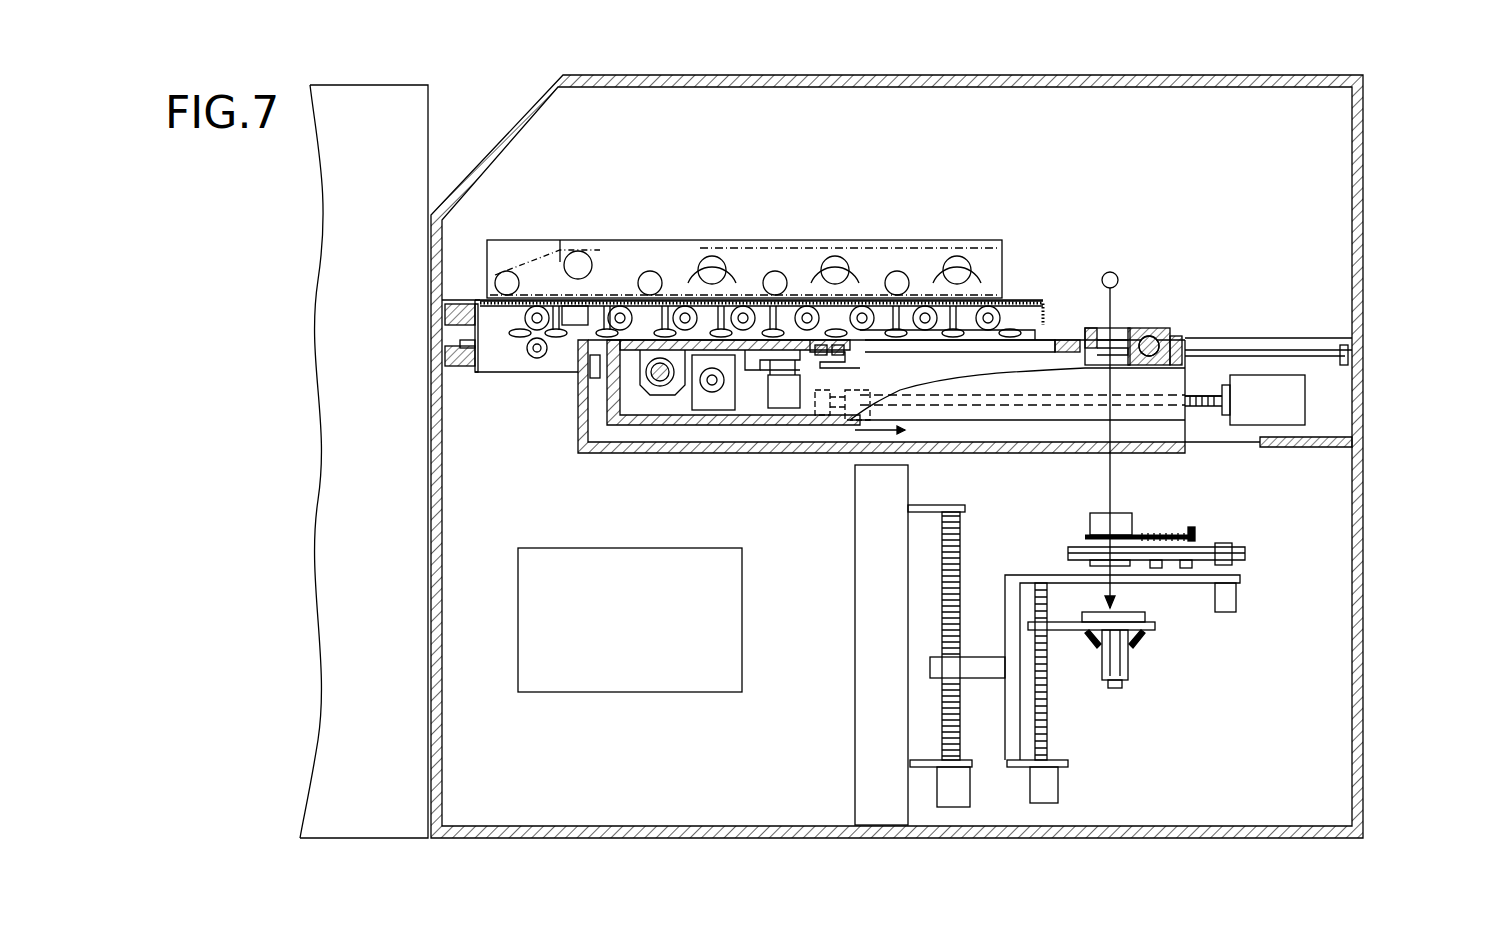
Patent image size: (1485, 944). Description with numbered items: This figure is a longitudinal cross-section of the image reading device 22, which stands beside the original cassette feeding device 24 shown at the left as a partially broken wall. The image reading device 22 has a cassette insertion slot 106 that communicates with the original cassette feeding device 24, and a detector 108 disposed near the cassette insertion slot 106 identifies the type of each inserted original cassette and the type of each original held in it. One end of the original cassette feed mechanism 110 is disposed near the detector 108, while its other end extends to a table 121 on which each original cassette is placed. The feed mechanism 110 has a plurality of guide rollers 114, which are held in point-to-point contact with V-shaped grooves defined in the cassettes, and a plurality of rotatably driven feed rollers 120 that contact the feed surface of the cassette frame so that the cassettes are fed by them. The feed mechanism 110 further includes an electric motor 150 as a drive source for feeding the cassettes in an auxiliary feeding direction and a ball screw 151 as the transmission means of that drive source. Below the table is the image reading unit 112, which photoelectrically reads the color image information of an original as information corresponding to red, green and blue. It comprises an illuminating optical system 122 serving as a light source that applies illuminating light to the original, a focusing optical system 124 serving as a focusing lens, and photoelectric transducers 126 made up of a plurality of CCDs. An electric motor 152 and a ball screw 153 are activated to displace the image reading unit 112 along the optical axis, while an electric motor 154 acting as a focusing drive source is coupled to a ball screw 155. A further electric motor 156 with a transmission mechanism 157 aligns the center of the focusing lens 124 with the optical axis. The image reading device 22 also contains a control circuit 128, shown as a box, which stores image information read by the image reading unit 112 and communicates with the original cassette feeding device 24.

The image reading device 22 is at (635, 82).
The original cassette feeding device 24 is at (368, 84).
The cassette insertion slot 106 is at (445, 336).
The detector 108 is at (460, 368).
The original cassette feed mechanism 110 is at (705, 238).
The image reading unit 112 is at (1136, 653).
The guide rollers 114 is at (838, 330).
The feed rollers 120 is at (625, 308).
The table 121 is at (1064, 340).
The illuminating optical system 122 is at (1118, 272).
The focusing optical system 124 is at (1128, 520).
The photoelectric transducers 126 is at (1142, 644).
The control circuit 128 is at (684, 680).
The electric motor 150 is at (1268, 375).
The ball screw 151 is at (1200, 418).
The electric motor 152 is at (970, 790).
The ball screw 153 is at (960, 546).
The electric motor 154 is at (1058, 790).
The ball screw 155 is at (1047, 720).
The electric motor 156 is at (1236, 596).
The transmission mechanism 157 is at (1245, 551).